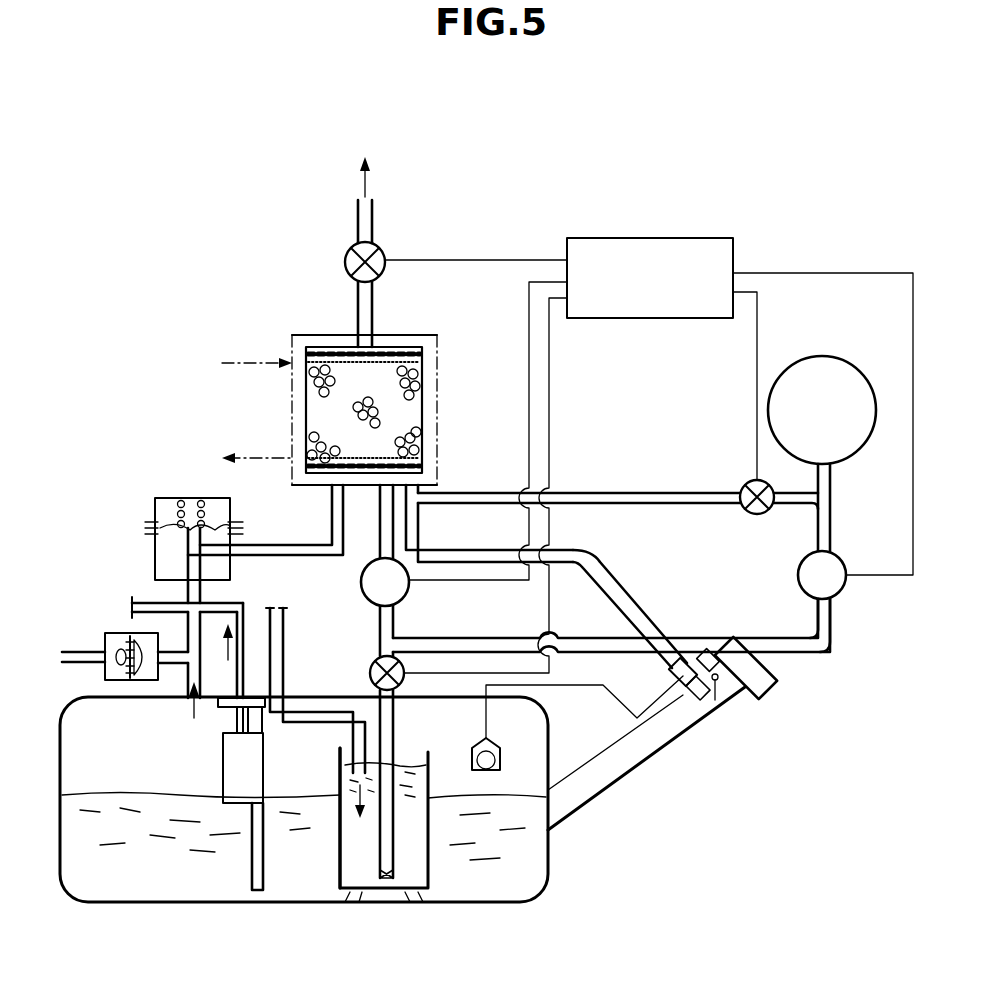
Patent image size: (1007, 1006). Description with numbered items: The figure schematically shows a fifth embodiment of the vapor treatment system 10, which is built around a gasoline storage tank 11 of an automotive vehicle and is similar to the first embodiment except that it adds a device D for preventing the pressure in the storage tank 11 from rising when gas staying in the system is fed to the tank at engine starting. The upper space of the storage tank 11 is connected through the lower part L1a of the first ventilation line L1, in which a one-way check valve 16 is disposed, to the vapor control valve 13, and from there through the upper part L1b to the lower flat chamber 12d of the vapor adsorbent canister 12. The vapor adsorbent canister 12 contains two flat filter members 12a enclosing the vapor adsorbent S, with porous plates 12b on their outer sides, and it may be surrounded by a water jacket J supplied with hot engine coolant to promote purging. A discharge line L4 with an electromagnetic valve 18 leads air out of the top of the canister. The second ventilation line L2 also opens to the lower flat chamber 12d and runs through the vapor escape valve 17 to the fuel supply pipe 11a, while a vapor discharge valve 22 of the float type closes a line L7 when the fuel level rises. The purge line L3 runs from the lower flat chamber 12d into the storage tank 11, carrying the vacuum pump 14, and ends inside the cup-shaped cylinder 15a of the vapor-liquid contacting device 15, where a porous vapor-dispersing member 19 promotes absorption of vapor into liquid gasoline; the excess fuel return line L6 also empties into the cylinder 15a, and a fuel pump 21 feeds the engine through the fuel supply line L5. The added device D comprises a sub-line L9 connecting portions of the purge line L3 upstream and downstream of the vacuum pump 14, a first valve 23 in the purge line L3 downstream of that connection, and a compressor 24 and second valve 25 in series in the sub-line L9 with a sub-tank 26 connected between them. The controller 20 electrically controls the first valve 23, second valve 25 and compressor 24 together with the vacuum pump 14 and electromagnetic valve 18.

The vapor treatment system 10 is at (537, 172).
The controller 20 is at (662, 238).
The discharge line L4 is at (375, 217).
The electromagnetic valve 18 is at (347, 255).
The vapor adsorbent canister 12 is at (437, 428).
The flat filter member 12a is at (330, 346).
The porous plate 12b is at (405, 346).
The lower flat chamber 12d is at (320, 478).
The water jacket J is at (292, 380).
The vapor adsorbent S is at (378, 405).
The vapor control valve 13 is at (155, 532).
The first ventilation line L1 is at (258, 557).
The lower part of first ventilation line L1a is at (178, 650).
The upper part of first ventilation line L1b is at (290, 548).
The fuel supply line L5 is at (133, 604).
The excess fuel return line L6 is at (283, 630).
The one-way check valve 16 is at (105, 673).
The vacuum pump 14 is at (409, 597).
The first valve 23 is at (370, 676).
The purge line L3 is at (405, 535).
The second ventilation line L2 is at (625, 583).
The vapor escape valve 17 is at (695, 660).
The line L7 is at (568, 685).
The vapor discharge valve 22 is at (505, 752).
The second valve 25 is at (757, 515).
The sub-tank 26 is at (855, 455).
The compressor 24 is at (843, 595).
The sub-line L9 is at (797, 656).
The device for preventing pressure rise D is at (825, 659).
The gasoline storage tank 11 is at (207, 903).
The fuel supply pipe 11a is at (655, 756).
The fuel pump 21 is at (223, 762).
The vapor-liquid contacting device 15 is at (430, 857).
The cup-shaped cylinder 15a is at (340, 866).
The porous vapor-dispersing member 19 is at (392, 882).